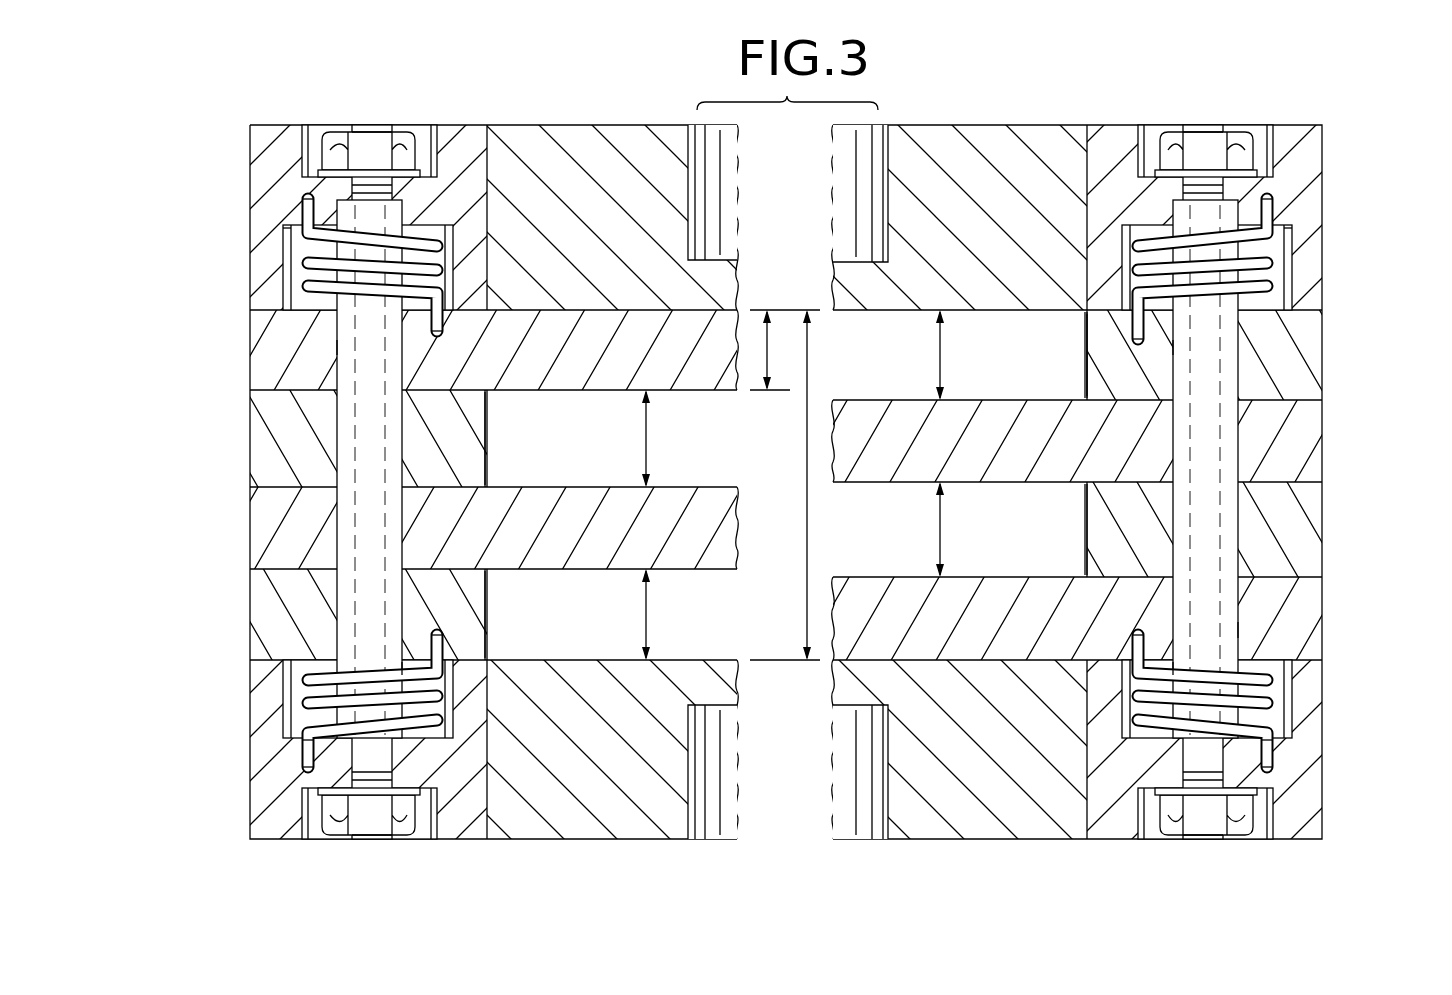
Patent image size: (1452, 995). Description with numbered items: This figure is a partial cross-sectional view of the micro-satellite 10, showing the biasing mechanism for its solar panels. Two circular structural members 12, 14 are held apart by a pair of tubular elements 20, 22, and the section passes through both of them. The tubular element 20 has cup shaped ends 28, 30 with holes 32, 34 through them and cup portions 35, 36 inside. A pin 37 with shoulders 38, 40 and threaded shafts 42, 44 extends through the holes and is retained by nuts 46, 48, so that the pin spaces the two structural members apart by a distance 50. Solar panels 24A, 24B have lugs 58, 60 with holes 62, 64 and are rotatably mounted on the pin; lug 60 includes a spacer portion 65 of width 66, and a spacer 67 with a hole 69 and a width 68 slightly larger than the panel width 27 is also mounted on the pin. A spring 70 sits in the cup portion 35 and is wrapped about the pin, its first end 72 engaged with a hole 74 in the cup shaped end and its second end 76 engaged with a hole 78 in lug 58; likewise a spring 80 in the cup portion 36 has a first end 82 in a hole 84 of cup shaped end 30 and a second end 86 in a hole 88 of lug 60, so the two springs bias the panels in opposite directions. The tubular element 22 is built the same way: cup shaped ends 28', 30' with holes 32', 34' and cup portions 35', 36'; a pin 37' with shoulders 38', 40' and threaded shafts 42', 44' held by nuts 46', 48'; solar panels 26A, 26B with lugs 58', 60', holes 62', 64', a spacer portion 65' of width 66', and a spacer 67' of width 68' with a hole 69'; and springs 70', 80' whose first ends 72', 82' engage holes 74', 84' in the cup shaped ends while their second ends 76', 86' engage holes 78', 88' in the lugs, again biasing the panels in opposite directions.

The micro-satellite 10 is at (897, 104).
The circular structural member 12 is at (620, 118).
The circular structural member 14 is at (582, 848).
The tubular element 20 is at (268, 118).
The tubular element 22 is at (1302, 118).
The solar panel 24A is at (546, 395).
The solar panel 24B is at (545, 575).
The solar panel 26A is at (928, 395).
The solar panel 26B is at (928, 565).
The width of the solar panels 27 is at (786, 395).
The cup shaped end 28 is at (312, 217).
The cup shaped end 28' is at (1262, 217).
The cup shaped end 30 is at (368, 781).
The cup shaped end 30' is at (1215, 781).
The hole 32 is at (279, 156).
The hole 32' is at (1296, 167).
The hole 34 is at (279, 782).
The hole 34' is at (1296, 793).
The cup portion 35 is at (429, 179).
The cup portion 35' is at (1280, 271).
The cup portion 36 is at (295, 699).
The cup portion 36' is at (1280, 699).
The pin 37 is at (312, 438).
The pin 37' is at (1262, 499).
The shoulder 38 is at (411, 444).
The shoulder 38' is at (1168, 444).
The shoulder 40 is at (398, 551).
The shoulder 40' is at (1164, 551).
The threaded shaft 42 is at (381, 90).
The threaded shaft 42' is at (1198, 90).
The threaded shaft 44 is at (381, 868).
The threaded shaft 44' is at (1186, 868).
The nut 46 is at (367, 109).
The nut 46' is at (1215, 109).
The nut 48 is at (368, 848).
The nut 48' is at (1209, 848).
The distance 50 is at (822, 365).
The lug 58 is at (437, 350).
The lug 58' is at (1135, 435).
The lug 60 is at (437, 528).
The lug 60' is at (1135, 618).
The hole 62 is at (237, 438).
The hole 62' is at (1338, 514).
The hole 64 is at (237, 597).
The hole 64' is at (1338, 636).
The spacer portion 65 is at (543, 438).
The spacer portion 65' is at (1036, 527).
The width 66 is at (696, 438).
The width 66' is at (966, 529).
The spacer 67 is at (543, 614).
The spacer 67' is at (1041, 355).
The width 68 is at (684, 614).
The width 68' is at (968, 352).
The hole 69 is at (312, 556).
The hole 69' is at (1262, 355).
The spring 70 is at (414, 190).
The spring 70' is at (1158, 194).
The first end 72 is at (214, 218).
The first end 72' is at (1361, 232).
The hole 74 is at (226, 183).
The hole 74' is at (1349, 197).
The second end 76 is at (290, 312).
The second end 76' is at (1069, 323).
The hole 78 is at (238, 340).
The hole 78' is at (1084, 350).
The spring 80 is at (409, 768).
The spring 80' is at (1148, 768).
The first end 82 is at (226, 722).
The first end 82' is at (1349, 732).
The hole 84 is at (226, 750).
The hole 84' is at (1349, 764).
The second end 86 is at (279, 655).
The second end 86' is at (1079, 609).
The hole 88 is at (290, 620).
The hole 88' is at (1064, 573).